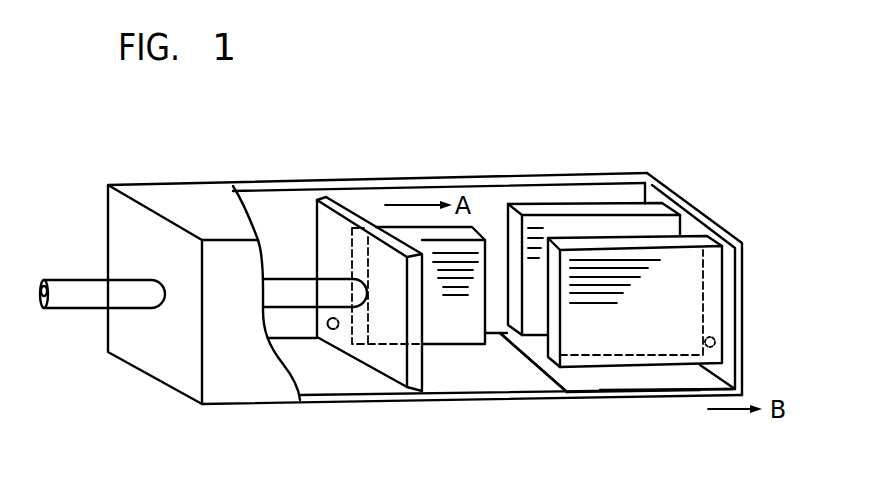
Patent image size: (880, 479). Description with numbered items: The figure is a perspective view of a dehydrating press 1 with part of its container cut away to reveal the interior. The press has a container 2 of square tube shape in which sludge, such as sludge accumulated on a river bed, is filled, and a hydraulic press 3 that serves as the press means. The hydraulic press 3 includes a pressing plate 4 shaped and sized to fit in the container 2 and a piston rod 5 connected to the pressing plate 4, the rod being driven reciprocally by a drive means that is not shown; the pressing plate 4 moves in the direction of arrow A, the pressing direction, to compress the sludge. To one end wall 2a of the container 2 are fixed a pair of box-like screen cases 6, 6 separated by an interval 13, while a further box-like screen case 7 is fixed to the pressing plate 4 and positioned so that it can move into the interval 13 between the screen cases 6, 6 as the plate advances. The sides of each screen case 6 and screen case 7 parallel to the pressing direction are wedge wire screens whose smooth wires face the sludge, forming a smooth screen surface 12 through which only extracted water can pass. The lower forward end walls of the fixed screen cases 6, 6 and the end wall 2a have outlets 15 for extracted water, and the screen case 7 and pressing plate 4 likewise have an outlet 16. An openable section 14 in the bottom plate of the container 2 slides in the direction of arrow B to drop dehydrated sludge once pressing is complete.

The dehydrating press 1 is at (490, 114).
The container 2 is at (582, 174).
The end wall of container 2a is at (690, 190).
The hydraulic press 3 is at (288, 256).
The pressing plate 4 is at (345, 207).
The piston rod 5 is at (80, 288).
The screen case 6 is at (536, 232).
The screen case 7 is at (463, 333).
The screen surface 12 is at (637, 340).
The interval 13 is at (614, 222).
The openable section 14 is at (597, 384).
The outlet for extracted water 15 is at (716, 339).
The outlet for extracted water 16 is at (331, 327).